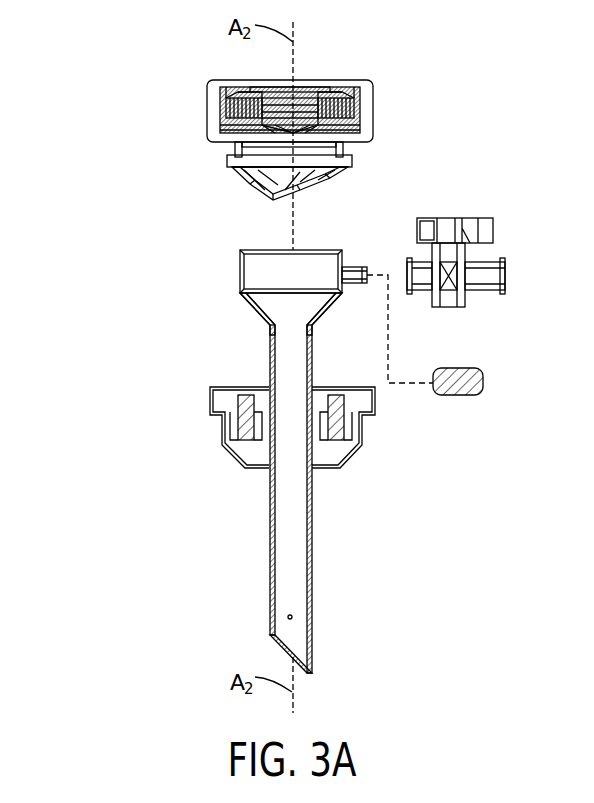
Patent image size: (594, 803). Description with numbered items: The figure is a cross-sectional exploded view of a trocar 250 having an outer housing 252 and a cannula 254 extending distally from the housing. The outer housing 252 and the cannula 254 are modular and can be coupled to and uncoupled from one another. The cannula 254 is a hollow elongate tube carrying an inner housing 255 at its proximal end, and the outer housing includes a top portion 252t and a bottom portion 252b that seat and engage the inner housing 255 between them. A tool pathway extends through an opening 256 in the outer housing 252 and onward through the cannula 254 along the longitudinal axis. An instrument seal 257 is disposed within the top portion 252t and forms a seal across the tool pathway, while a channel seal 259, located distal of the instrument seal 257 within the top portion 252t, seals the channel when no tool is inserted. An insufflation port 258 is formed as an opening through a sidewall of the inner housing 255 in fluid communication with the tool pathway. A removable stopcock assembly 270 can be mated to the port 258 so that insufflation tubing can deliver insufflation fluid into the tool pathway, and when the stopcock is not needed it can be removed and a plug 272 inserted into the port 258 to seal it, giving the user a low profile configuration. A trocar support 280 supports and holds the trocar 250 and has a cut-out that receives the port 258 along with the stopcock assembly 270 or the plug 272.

The trocar 250 is at (148, 243).
The outer housing 252 is at (372, 88).
The top portion 252t is at (207, 90).
The bottom portion 252b is at (207, 138).
The cannula 254 is at (306, 540).
The inner housing 255 is at (246, 277).
The opening 256 is at (320, 80).
The instrument seal 257 is at (372, 115).
The insufflation port 258 is at (356, 266).
The channel seal 259 is at (337, 166).
The stopcock assembly 270 is at (493, 219).
The plug 272 is at (457, 395).
The trocar support 280 is at (213, 402).